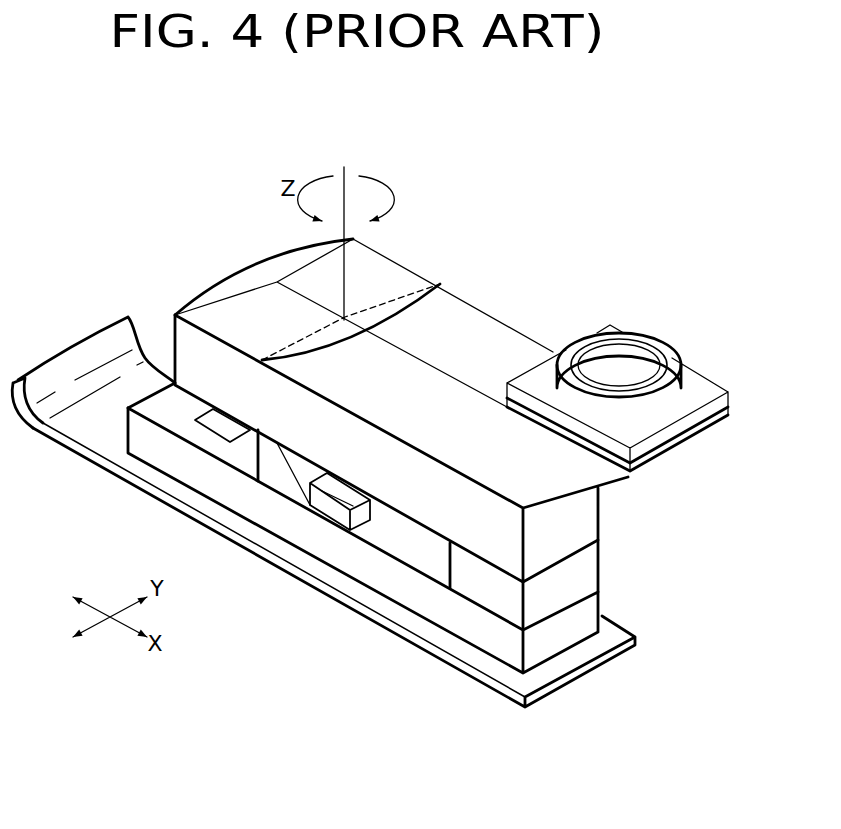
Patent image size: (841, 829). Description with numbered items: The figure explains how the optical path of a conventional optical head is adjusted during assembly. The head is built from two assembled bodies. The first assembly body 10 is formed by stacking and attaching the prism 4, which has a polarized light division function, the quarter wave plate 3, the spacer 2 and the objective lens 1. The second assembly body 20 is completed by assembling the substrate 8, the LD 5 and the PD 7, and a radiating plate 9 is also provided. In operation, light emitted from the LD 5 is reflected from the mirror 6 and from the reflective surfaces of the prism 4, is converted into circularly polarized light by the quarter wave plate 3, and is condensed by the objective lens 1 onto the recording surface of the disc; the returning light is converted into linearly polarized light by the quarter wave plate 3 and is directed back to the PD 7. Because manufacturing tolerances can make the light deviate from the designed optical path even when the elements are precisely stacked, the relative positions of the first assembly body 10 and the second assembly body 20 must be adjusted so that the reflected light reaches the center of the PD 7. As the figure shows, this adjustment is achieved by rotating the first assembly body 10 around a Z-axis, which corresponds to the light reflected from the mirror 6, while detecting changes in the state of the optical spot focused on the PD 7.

The objective lens 1 is at (630, 358).
The spacer 2 is at (697, 388).
The quarter wave plate 3 is at (665, 453).
The prism 4 is at (501, 340).
The LD 5 is at (310, 503).
The mirror 6 is at (278, 478).
The photodetector 7 is at (207, 433).
The substrate 8 is at (375, 570).
The radiating plate 9 is at (392, 622).
The first assembly body 10 is at (657, 483).
The second assembly body 20 is at (622, 573).